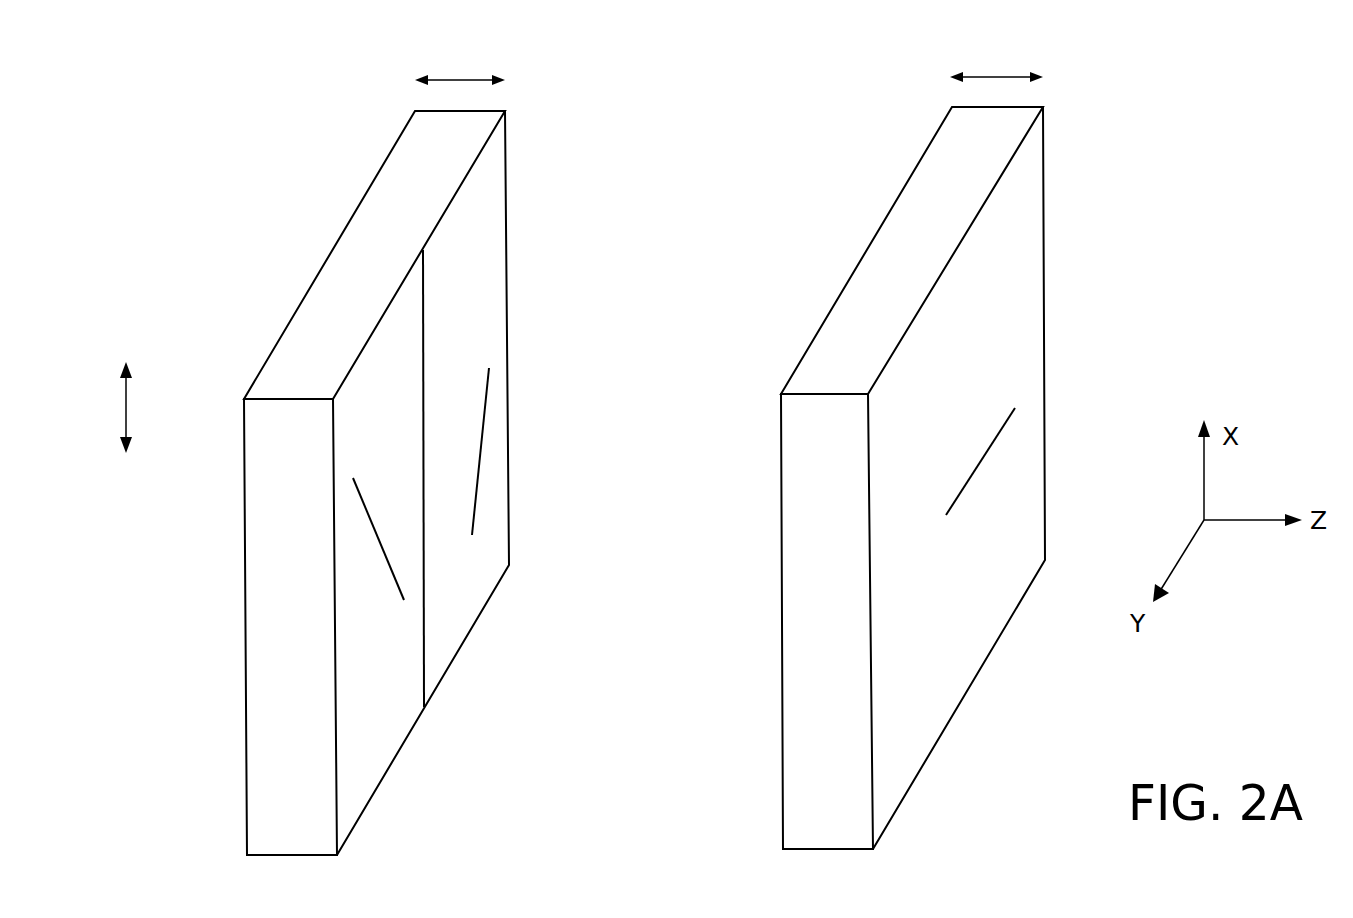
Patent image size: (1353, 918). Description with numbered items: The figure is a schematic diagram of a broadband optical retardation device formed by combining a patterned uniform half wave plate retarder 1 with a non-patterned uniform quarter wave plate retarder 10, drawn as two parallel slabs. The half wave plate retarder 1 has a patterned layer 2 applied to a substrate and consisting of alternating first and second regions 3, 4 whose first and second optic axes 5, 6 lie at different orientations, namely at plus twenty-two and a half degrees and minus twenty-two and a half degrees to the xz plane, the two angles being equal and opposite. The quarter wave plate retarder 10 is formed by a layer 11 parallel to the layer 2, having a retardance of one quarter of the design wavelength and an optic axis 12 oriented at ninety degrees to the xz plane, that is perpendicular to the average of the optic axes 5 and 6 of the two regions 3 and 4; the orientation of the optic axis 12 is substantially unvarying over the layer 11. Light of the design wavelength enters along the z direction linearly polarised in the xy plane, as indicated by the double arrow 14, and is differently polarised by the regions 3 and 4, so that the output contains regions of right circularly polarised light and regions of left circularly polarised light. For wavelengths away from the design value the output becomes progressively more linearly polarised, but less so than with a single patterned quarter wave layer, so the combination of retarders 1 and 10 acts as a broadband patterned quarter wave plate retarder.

The patterned uniform half wave plate retarder 1 is at (378, 445).
The patterned layer 2 is at (285, 765).
The first region 3 is at (467, 590).
The second region 4 is at (378, 750).
The first optic axis 5 is at (482, 455).
The second optic axis 6 is at (374, 538).
The non-patterned uniform quarter wave plate retarder 10 is at (984, 439).
The layer 11 is at (948, 665).
The optic axis 12 is at (973, 475).
The linearly polarised incident light 14 is at (125, 408).